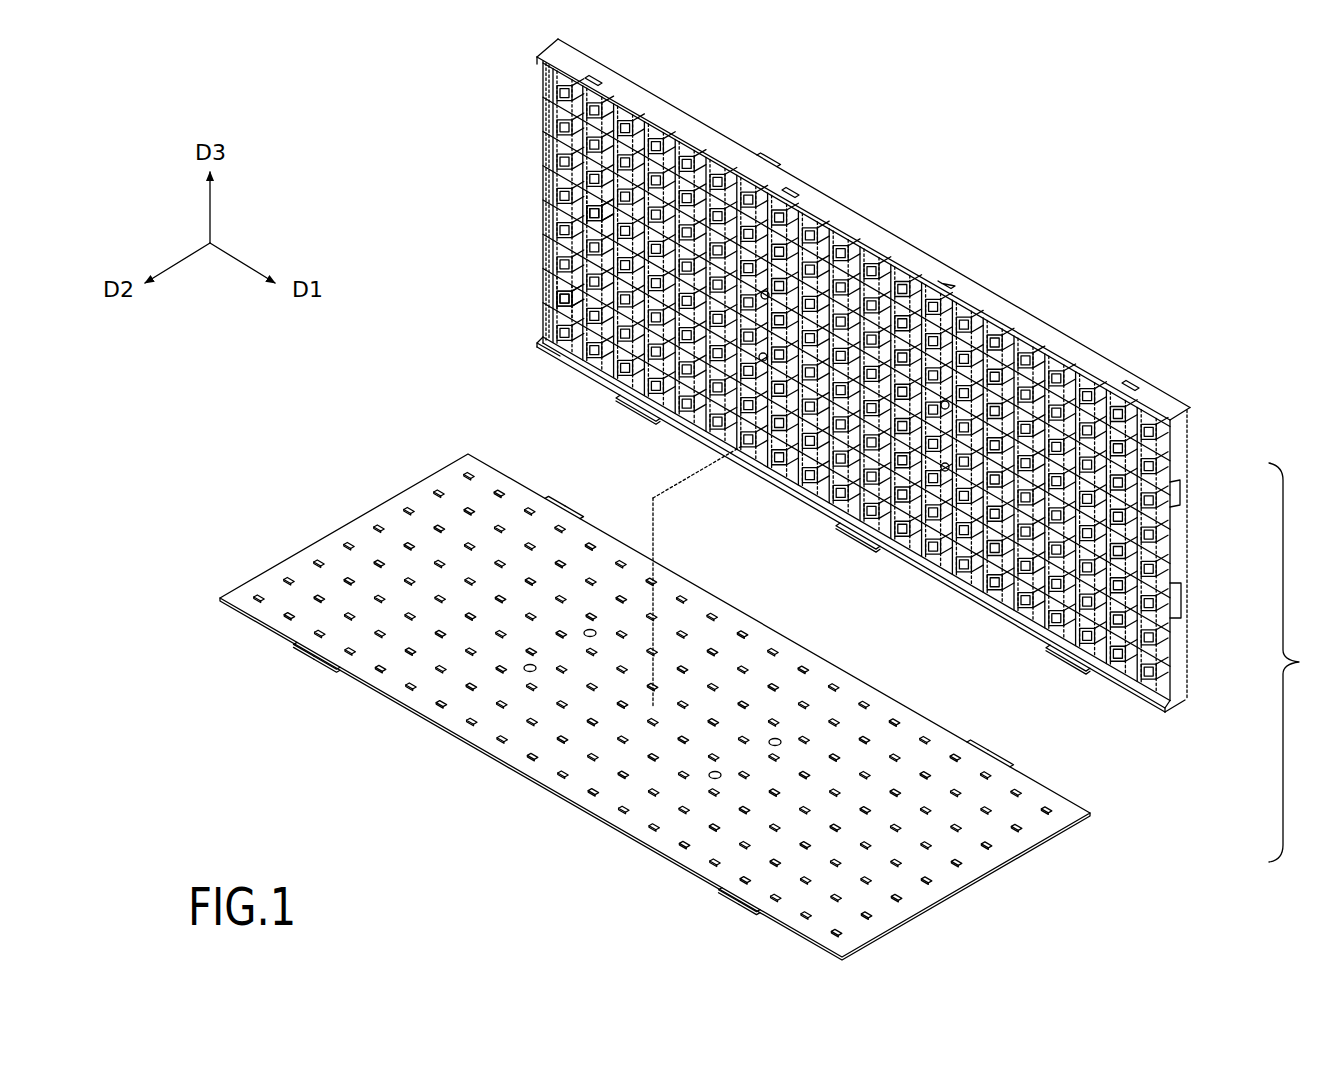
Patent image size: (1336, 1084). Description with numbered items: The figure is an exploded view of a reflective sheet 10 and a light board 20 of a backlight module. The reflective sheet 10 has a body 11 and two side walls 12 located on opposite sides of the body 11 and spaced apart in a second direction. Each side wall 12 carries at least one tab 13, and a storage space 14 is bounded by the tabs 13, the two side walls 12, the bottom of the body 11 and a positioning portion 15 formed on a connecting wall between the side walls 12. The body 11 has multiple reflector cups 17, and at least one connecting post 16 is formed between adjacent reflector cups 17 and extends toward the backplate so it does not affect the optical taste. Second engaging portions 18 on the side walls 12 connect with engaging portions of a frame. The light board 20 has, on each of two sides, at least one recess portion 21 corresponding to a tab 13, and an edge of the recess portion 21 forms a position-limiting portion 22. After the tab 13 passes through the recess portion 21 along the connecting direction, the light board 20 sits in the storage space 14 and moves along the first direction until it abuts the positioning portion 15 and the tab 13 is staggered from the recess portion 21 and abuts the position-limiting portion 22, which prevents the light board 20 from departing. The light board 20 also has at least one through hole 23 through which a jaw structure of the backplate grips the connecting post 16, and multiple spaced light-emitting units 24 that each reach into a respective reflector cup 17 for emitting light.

The reflective sheet 10 is at (867, 404).
The body 11 is at (541, 188).
The side walls 12 is at (863, 404).
The tab 13 is at (878, 501).
The storage space 14 is at (514, 371).
The positioning portion 15 is at (1218, 549).
The connecting post 16 is at (854, 471).
The reflector cups 17 is at (530, 281).
The second engaging portions 18 is at (891, 233).
The light board 20 is at (636, 683).
The recess portion 21 is at (638, 683).
The position-limiting portion 22 is at (599, 655).
The through hole 23 is at (653, 705).
The light-emitting units 24 is at (655, 707).